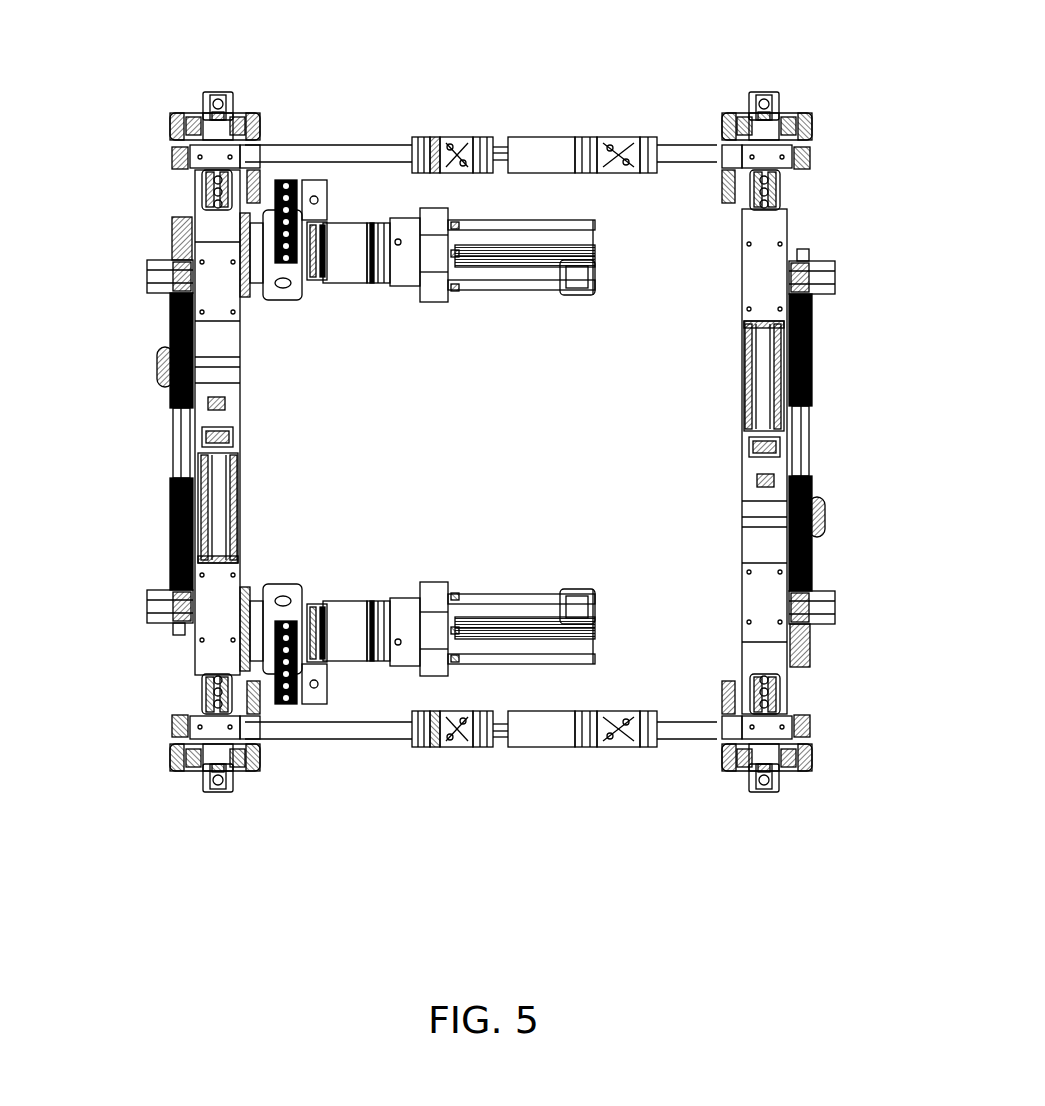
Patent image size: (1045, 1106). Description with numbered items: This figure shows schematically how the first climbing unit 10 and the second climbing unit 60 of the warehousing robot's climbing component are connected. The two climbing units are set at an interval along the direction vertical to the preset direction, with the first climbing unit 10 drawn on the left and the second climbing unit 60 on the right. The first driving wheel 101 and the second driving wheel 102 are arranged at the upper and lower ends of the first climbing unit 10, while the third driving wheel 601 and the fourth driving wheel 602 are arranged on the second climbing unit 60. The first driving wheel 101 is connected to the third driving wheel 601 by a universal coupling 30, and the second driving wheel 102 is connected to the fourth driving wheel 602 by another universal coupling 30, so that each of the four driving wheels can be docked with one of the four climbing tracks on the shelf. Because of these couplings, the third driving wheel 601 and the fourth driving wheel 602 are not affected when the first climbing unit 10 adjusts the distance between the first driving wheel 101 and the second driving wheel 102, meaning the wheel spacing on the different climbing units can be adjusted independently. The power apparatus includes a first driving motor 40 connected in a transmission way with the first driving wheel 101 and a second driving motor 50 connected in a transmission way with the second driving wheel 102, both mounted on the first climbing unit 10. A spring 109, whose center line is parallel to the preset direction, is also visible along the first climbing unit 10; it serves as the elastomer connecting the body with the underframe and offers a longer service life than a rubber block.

The first climbing unit 10 is at (210, 228).
The universal coupling 30 is at (480, 138).
The first driving motor 40 is at (560, 250).
The second driving motor 50 is at (430, 635).
The second climbing unit 60 is at (787, 238).
The first driving wheel 101 is at (205, 183).
The second driving wheel 102 is at (210, 690).
The spring 109 is at (182, 505).
The third driving wheel 601 is at (808, 118).
The fourth driving wheel 602 is at (785, 690).